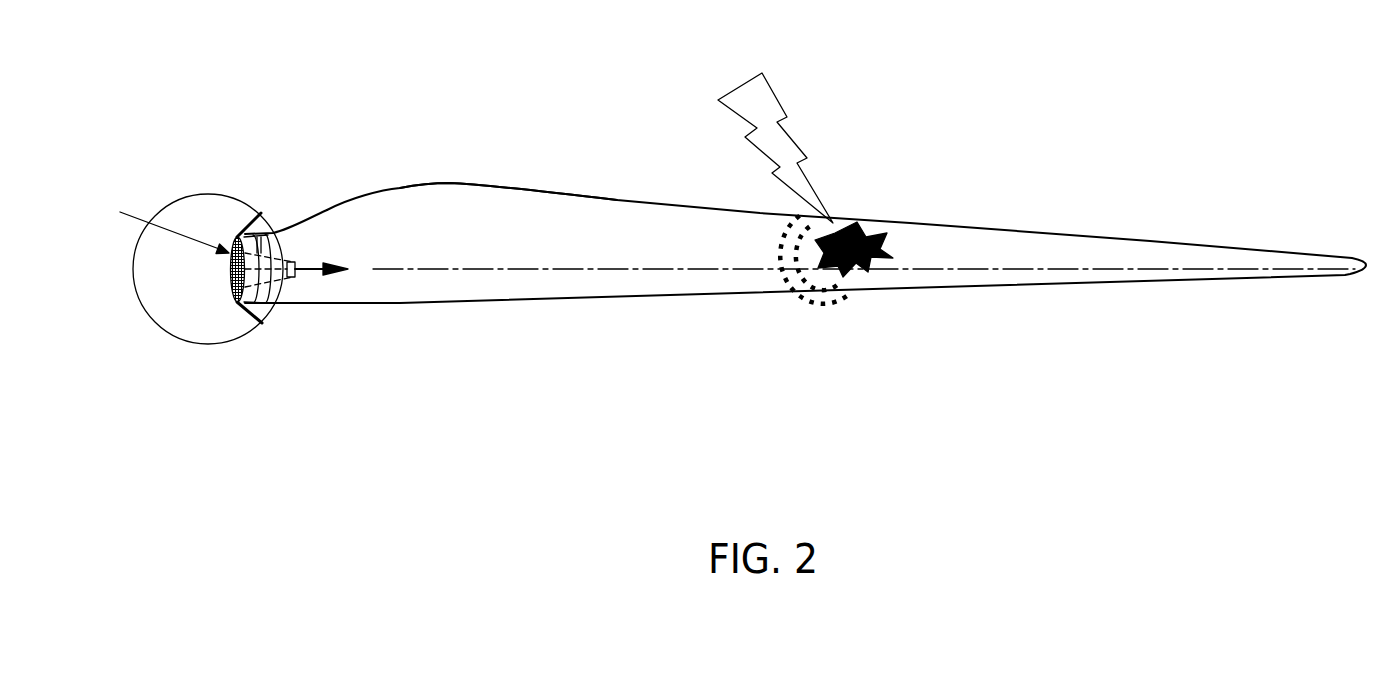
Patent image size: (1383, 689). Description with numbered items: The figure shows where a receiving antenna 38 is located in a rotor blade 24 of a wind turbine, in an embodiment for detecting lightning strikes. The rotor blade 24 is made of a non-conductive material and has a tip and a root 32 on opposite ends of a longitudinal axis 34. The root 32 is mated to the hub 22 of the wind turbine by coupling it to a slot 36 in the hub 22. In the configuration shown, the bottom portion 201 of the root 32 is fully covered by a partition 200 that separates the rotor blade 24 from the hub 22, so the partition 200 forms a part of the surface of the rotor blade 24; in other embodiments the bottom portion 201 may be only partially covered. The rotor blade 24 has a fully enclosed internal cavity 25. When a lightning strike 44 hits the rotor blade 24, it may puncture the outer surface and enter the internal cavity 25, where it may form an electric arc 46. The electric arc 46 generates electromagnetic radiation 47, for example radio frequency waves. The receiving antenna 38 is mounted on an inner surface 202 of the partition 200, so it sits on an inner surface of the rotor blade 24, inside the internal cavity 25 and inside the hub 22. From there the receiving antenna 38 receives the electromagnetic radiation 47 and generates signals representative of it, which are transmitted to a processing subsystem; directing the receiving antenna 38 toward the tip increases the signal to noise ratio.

The hub 22 is at (177, 193).
The rotor blade 24 is at (1075, 283).
The internal cavity 25 is at (472, 223).
The root 32 is at (275, 233).
The longitudinal axis 34 is at (563, 269).
The slot 36 is at (243, 321).
The receiving antenna 38 is at (258, 214).
The lightning strike 44 is at (775, 92).
The electric arc 46 is at (870, 273).
The electromagnetic radiation 47 is at (784, 232).
The partition 200 is at (230, 282).
The bottom portion 201 is at (153, 223).
The inner surface 202 is at (268, 297).